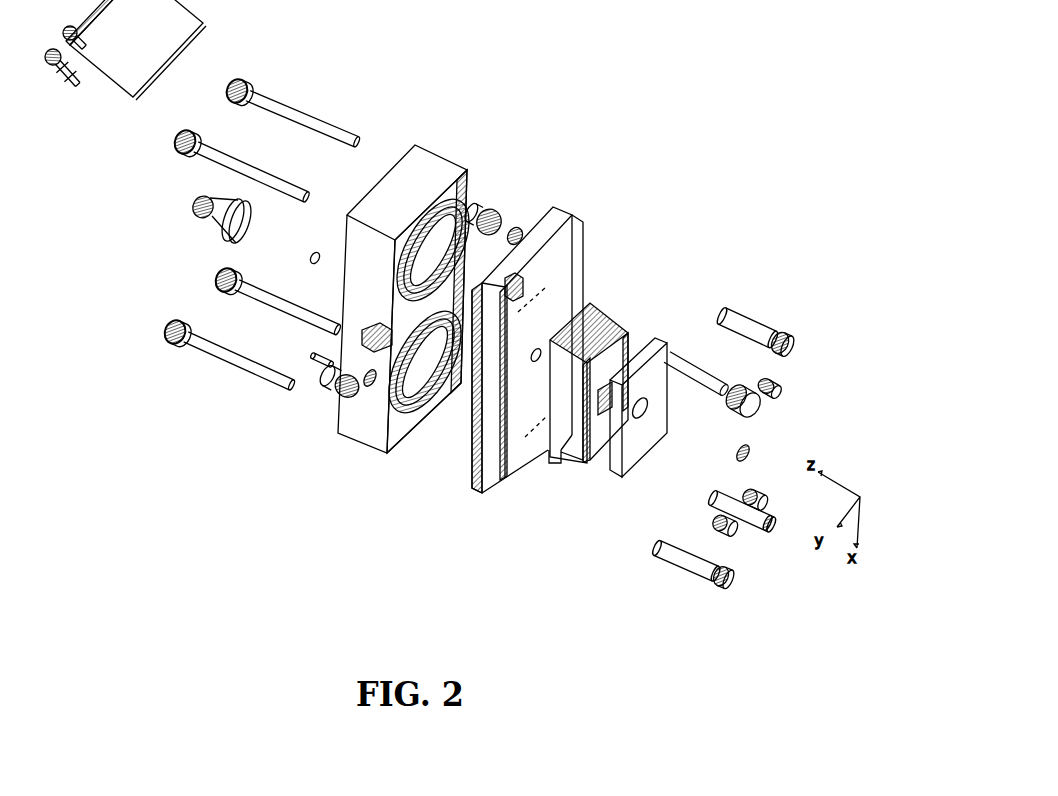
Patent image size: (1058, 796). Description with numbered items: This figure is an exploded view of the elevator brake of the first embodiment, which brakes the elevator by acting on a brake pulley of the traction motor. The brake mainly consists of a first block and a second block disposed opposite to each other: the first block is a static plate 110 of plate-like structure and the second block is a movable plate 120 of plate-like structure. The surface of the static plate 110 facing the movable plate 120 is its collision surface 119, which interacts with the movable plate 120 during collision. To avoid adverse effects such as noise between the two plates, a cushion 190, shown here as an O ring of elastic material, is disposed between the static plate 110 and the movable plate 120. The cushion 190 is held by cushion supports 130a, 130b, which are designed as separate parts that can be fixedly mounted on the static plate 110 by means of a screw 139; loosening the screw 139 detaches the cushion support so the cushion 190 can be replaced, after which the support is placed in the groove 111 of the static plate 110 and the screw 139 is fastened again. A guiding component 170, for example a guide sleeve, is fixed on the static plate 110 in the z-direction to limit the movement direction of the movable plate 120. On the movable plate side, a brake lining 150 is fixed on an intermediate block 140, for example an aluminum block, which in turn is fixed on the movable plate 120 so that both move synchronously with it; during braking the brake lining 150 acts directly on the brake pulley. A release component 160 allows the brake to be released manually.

The static plate 110 is at (347, 440).
The groove 111 is at (334, 361).
The collision surface 119 is at (428, 414).
The movable plate 120 is at (474, 492).
The cushion support 130a is at (503, 208).
The cushion support 130b is at (335, 400).
The screw 139 is at (366, 343).
The intermediate block 140 is at (606, 326).
The brake lining 150 is at (655, 347).
The release component 160 is at (208, 226).
The guiding component 170 is at (771, 322).
The cushion 190 is at (352, 422).